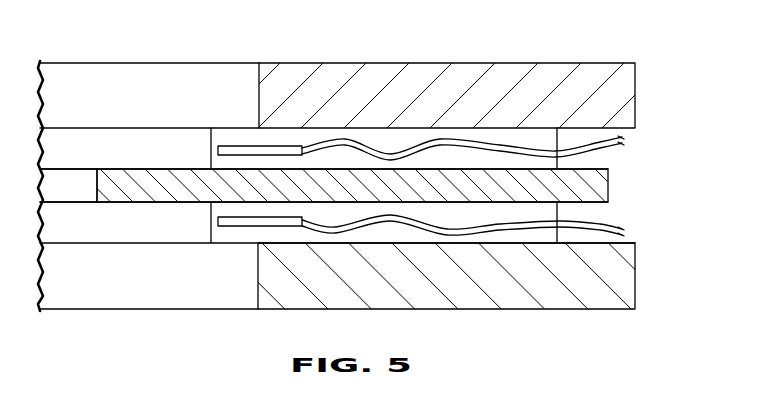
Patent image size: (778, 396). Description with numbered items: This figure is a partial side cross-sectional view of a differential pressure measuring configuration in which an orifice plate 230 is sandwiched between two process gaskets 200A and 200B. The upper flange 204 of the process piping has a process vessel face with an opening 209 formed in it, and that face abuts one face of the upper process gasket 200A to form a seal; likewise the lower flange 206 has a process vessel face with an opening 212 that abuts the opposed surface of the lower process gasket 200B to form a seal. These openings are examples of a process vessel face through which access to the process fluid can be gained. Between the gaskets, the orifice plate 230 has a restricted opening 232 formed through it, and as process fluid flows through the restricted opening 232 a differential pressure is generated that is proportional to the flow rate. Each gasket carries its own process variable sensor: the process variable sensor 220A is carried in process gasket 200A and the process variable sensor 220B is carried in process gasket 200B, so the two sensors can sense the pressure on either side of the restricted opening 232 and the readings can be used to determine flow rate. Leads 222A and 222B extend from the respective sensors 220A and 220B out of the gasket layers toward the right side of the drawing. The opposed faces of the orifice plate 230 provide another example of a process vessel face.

The process gasket 200A is at (240, 127).
The process gasket 200B is at (240, 245).
The flange 204 is at (594, 63).
The flange 206 is at (600, 298).
The opening 209 is at (192, 108).
The opening 212 is at (192, 288).
The process variable sensor 220A is at (218, 149).
The process variable sensor 220B is at (218, 221).
The first sensor leads 222A is at (611, 155).
The second sensor leads 222B is at (611, 228).
The orifice plate 230 is at (117, 174).
The restricted opening 232 is at (83, 195).